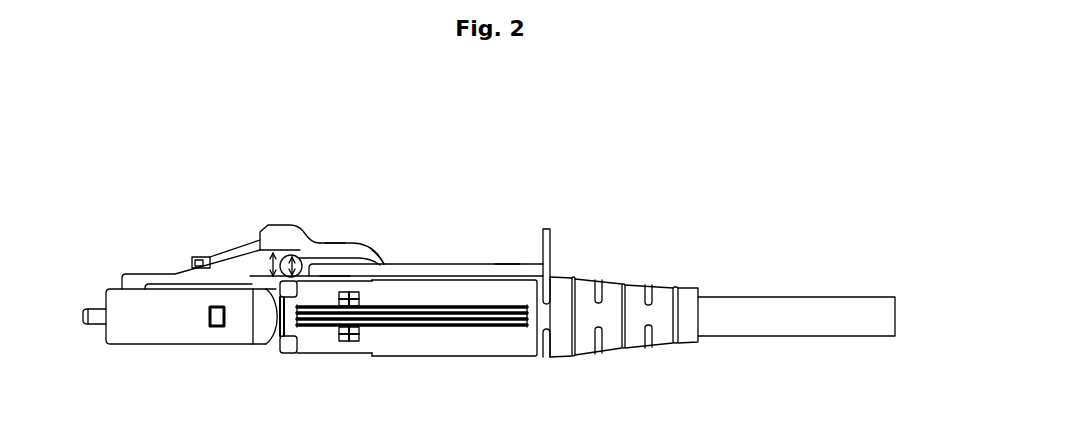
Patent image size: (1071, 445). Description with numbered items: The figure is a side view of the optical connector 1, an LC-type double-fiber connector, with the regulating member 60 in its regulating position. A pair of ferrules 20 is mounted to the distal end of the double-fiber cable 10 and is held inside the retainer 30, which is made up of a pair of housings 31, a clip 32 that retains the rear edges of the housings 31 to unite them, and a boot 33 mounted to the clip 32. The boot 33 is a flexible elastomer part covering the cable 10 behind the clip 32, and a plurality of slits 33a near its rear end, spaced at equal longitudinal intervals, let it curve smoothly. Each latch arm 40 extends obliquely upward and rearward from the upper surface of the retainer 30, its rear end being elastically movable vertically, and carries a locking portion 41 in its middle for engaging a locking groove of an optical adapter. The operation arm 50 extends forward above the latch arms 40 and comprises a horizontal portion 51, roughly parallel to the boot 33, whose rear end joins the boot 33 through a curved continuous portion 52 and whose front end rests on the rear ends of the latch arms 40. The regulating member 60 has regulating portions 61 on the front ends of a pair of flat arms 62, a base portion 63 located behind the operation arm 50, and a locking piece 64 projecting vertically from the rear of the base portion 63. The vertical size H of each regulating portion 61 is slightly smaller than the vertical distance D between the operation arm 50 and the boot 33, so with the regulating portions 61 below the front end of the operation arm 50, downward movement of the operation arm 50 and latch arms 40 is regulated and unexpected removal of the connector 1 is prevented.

The optical connector 1 is at (437, 179).
The double-fiber cable 10 is at (793, 328).
The ferrule 20 is at (100, 313).
The retainer 30 is at (263, 347).
The housing 31 is at (172, 328).
The clip 32 is at (289, 353).
The boot 33 is at (432, 340).
The slit 33a is at (547, 297).
The latch arm 40 is at (178, 270).
The locking portion 41 is at (223, 255).
The operation arm 50 is at (353, 242).
The horizontal portion 51 is at (332, 247).
The continuous portion 52 is at (387, 262).
The regulating member 60 is at (457, 263).
The regulating portion 61 is at (299, 260).
The arm 62 is at (335, 268).
The base portion 63 is at (505, 270).
The locking piece 64 is at (550, 270).
The vertical distance D is at (265, 258).
The vertical size H is at (273, 252).